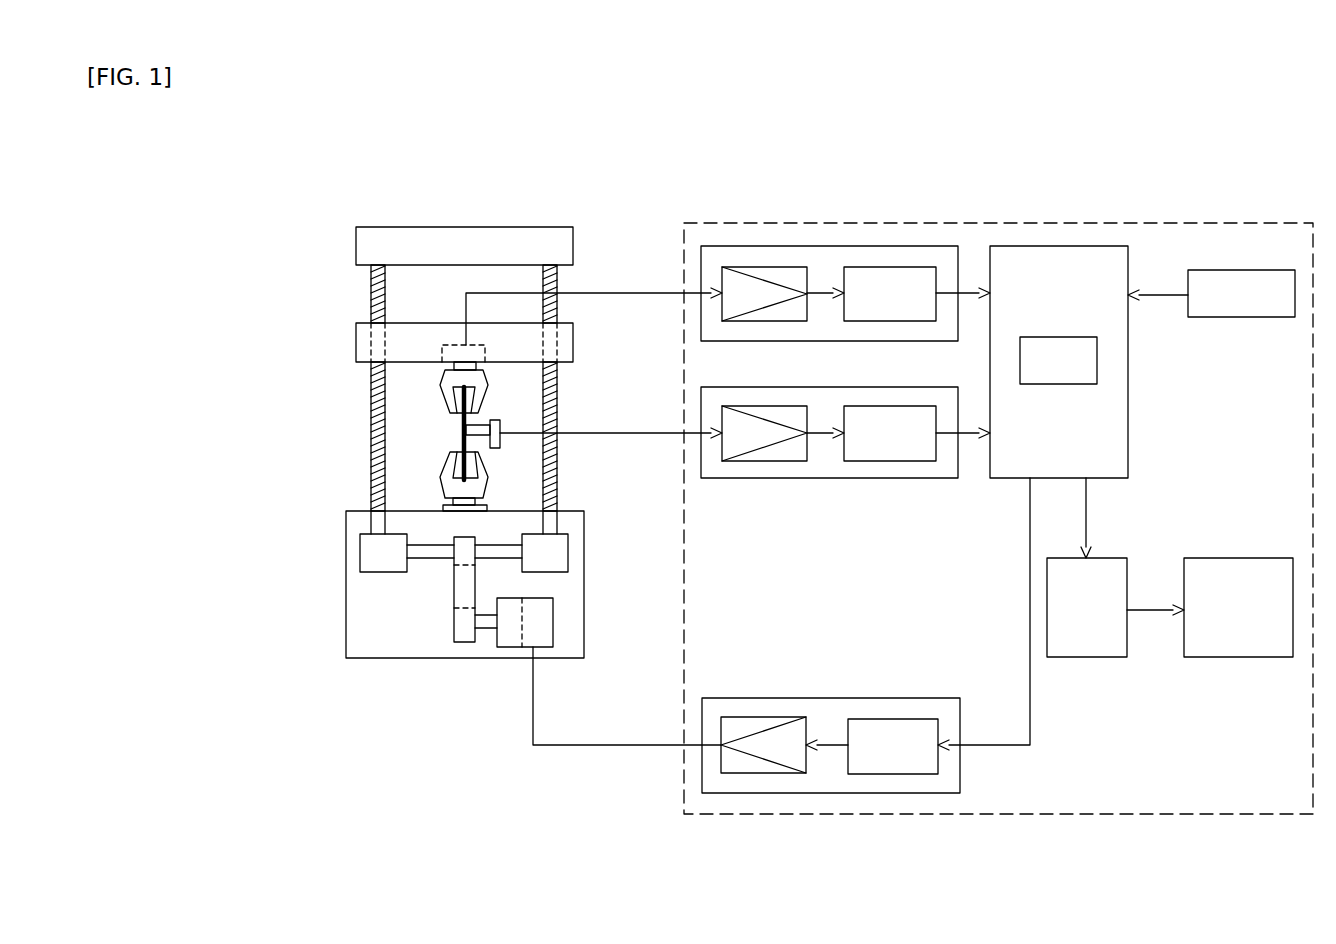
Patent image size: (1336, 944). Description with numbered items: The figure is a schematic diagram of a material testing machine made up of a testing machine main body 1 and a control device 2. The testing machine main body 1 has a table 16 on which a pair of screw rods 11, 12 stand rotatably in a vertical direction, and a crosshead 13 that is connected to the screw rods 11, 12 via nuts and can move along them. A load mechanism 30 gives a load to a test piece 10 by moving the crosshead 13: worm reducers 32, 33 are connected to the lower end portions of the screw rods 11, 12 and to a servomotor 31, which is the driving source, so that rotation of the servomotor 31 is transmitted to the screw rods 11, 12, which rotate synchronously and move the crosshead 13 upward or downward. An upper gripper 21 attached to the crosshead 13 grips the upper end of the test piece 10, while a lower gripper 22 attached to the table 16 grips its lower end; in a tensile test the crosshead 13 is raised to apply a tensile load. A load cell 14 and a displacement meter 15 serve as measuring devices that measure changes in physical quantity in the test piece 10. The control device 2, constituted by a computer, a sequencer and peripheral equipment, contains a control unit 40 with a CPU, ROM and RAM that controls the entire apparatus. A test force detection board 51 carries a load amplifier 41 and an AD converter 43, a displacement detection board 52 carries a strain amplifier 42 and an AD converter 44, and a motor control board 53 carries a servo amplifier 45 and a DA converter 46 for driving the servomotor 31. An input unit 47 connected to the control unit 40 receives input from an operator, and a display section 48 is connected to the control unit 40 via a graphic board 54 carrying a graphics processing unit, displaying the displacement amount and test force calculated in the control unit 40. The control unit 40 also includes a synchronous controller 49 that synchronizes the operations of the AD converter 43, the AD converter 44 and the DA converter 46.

The testing machine main body 1 is at (460, 215).
The control device 2 is at (1010, 222).
The test piece 10 is at (463, 433).
The screw rod 11 is at (371, 472).
The screw rod 12 is at (557, 479).
The crosshead 13 is at (359, 348).
The load cell 14 is at (447, 350).
The displacement meter 15 is at (485, 425).
The table 16 is at (356, 627).
The upper gripper 21 is at (452, 395).
The lower gripper 22 is at (481, 482).
The load mechanism 30 is at (450, 686).
The servomotor 31 is at (550, 618).
The worm reducer 32 is at (387, 563).
The worm reducer 33 is at (560, 553).
The control unit 40 is at (1050, 248).
The load amplifier 41 is at (768, 268).
The strain amplifier 42 is at (764, 462).
The AD converter 43 is at (878, 268).
The AD converter 44 is at (887, 462).
The servo amplifier 45 is at (750, 718).
The DA converter 46 is at (898, 719).
The input unit 47 is at (1243, 310).
The display section 48 is at (1232, 572).
The synchronous controller 49 is at (1085, 357).
The test force detection board 51 is at (822, 247).
The displacement detection board 52 is at (832, 478).
The motor control board 53 is at (832, 698).
The graphic board 54 is at (1082, 658).